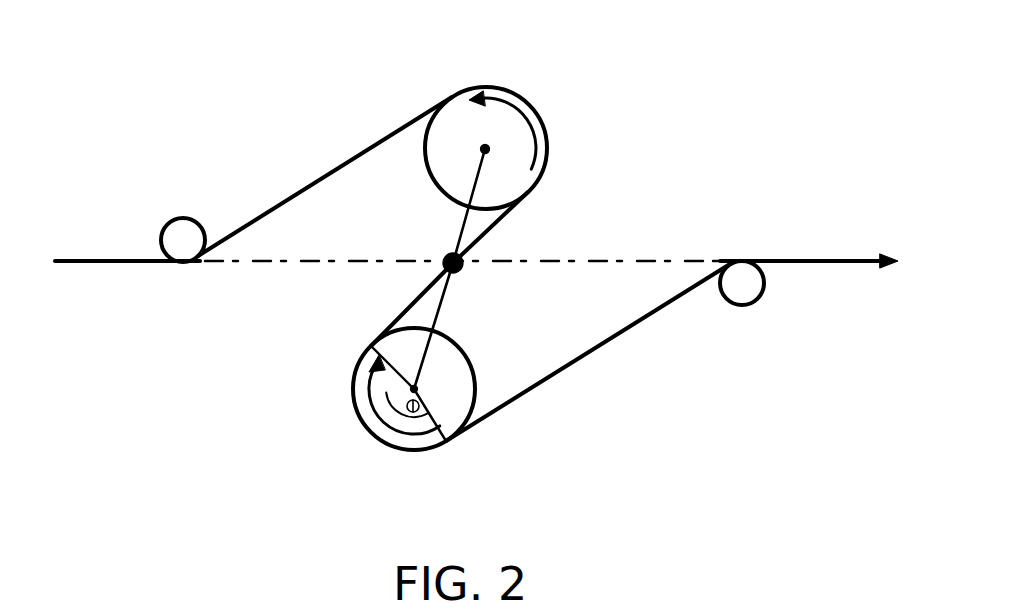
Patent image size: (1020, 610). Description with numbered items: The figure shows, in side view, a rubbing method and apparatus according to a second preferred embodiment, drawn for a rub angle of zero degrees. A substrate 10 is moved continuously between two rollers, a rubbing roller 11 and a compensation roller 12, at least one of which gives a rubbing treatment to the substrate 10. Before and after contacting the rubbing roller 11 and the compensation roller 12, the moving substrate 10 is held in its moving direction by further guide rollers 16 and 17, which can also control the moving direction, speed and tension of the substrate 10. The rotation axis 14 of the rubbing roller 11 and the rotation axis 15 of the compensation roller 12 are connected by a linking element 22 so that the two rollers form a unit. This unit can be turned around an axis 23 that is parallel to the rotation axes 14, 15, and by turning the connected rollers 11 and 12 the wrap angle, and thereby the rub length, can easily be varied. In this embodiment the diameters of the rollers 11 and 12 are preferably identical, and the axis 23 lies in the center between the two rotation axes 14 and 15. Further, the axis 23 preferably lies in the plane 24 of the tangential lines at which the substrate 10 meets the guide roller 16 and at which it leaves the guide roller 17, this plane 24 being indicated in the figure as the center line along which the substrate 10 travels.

The substrate 10 is at (100, 263).
The rubbing roller 11 is at (435, 438).
The compensation roller 12 is at (455, 127).
The rotation axis 14 is at (414, 389).
The rotation axis 15 is at (485, 149).
The guide roller 16 is at (190, 247).
The guide roller 17 is at (743, 292).
The linking element 22 is at (441, 297).
The axis 23 is at (438, 260).
The plane 24 is at (612, 262).